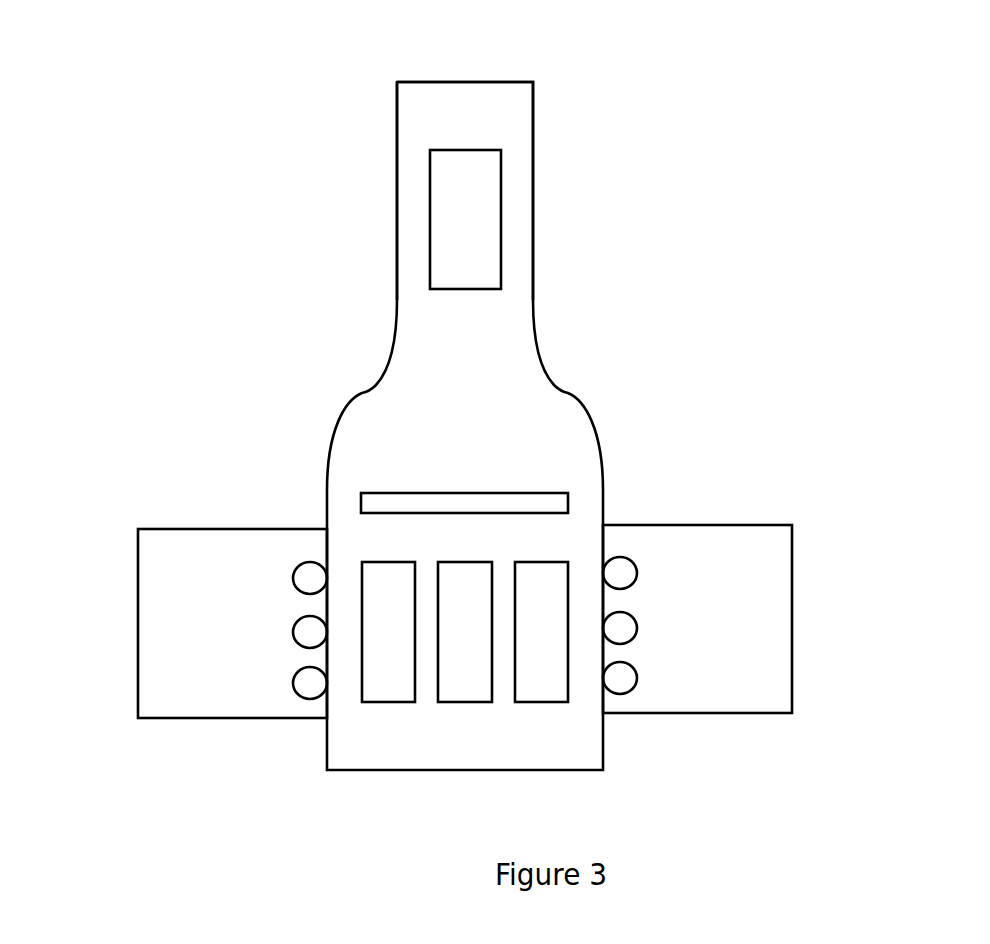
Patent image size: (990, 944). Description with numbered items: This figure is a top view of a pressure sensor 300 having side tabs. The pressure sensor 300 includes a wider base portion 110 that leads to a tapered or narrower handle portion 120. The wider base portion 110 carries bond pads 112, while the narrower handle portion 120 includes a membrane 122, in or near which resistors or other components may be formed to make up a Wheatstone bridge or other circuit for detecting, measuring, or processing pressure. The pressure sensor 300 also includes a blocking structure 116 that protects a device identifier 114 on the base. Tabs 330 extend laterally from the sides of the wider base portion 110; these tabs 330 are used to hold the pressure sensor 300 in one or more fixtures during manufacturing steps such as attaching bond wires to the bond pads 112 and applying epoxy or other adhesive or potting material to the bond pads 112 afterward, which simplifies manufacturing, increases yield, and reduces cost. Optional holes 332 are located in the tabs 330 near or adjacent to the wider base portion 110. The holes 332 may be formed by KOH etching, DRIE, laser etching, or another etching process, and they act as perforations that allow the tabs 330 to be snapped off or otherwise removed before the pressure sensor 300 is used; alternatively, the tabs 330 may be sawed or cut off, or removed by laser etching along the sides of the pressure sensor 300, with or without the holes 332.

The pressure sensor 300 is at (866, 172).
The wider base portion 110 is at (327, 752).
The bond pads 112 is at (532, 702).
The device identifier 114 is at (515, 458).
The blocking structure 116 is at (565, 492).
The narrower handle portion 120 is at (397, 177).
The membrane 122 is at (482, 185).
The tabs 330 is at (792, 528).
The holes 332 is at (638, 680).